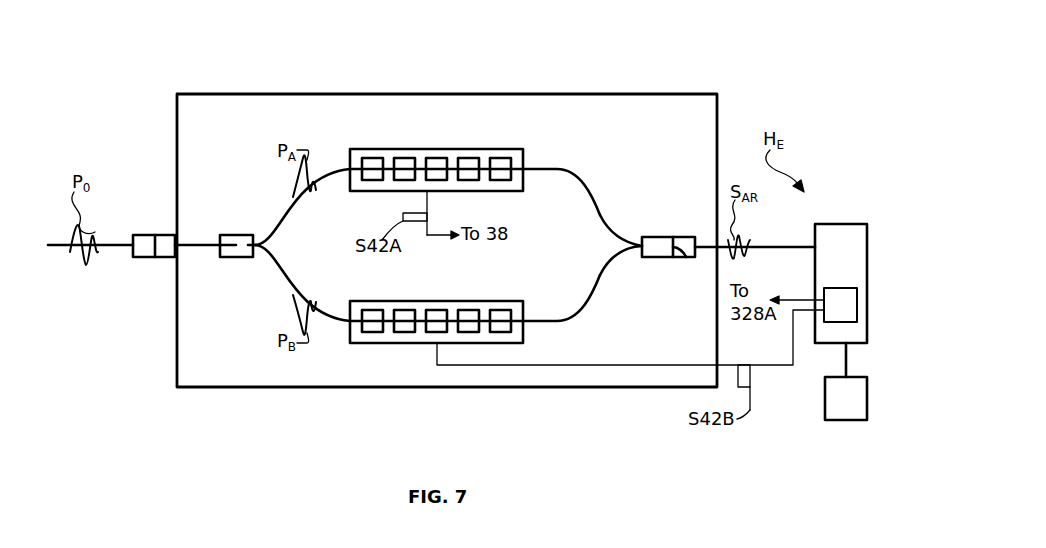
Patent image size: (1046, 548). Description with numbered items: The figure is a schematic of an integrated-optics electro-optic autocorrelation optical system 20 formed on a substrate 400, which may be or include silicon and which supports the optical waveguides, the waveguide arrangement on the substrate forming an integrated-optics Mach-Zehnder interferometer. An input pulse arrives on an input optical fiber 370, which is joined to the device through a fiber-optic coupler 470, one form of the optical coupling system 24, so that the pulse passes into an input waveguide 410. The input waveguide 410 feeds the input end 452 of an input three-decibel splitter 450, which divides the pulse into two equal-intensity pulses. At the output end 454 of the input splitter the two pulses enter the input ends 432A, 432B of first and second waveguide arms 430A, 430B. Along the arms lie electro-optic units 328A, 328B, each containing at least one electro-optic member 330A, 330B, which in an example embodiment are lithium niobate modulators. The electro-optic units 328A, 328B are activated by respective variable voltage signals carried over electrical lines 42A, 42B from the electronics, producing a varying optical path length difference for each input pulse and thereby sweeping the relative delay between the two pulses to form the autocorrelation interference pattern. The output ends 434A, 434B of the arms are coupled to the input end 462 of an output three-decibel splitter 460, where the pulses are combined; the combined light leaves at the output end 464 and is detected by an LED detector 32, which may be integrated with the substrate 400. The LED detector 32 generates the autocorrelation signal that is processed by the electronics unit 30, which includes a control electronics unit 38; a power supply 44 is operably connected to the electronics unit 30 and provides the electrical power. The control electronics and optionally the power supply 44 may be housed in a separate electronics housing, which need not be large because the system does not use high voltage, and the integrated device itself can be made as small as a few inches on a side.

The autocorrelation optical system 20 is at (697, 42).
The optical coupling system 24 is at (155, 203).
The electronics unit 30 is at (835, 203).
The LED detector 32 is at (688, 237).
The control electronics unit 38 is at (852, 319).
The control signal line 42A is at (760, 365).
The control signal line 42B is at (802, 298).
The power supply 44 is at (858, 413).
The EO unit 328A is at (414, 148).
The EO unit 328B is at (461, 310).
The EO member 330A is at (373, 158).
The EO member 330B is at (373, 310).
The input optical fiber 370 is at (102, 252).
The substrate 400 is at (245, 121).
The input waveguide 410 is at (200, 247).
The first waveguide arm 430A is at (565, 160).
The second waveguide arm 430B is at (565, 325).
The input end 432A is at (285, 236).
The input end 432B is at (285, 258).
The output end 434A is at (608, 235).
The output end 434B is at (598, 258).
The input 3 dB splitter 450 is at (235, 258).
The input end 452 is at (226, 235).
The output end 454 is at (254, 235).
The output 3 dB splitter 460 is at (652, 257).
The input end 462 is at (652, 237).
The output end 464 is at (684, 257).
The fiber-optic coupler 470 is at (163, 257).